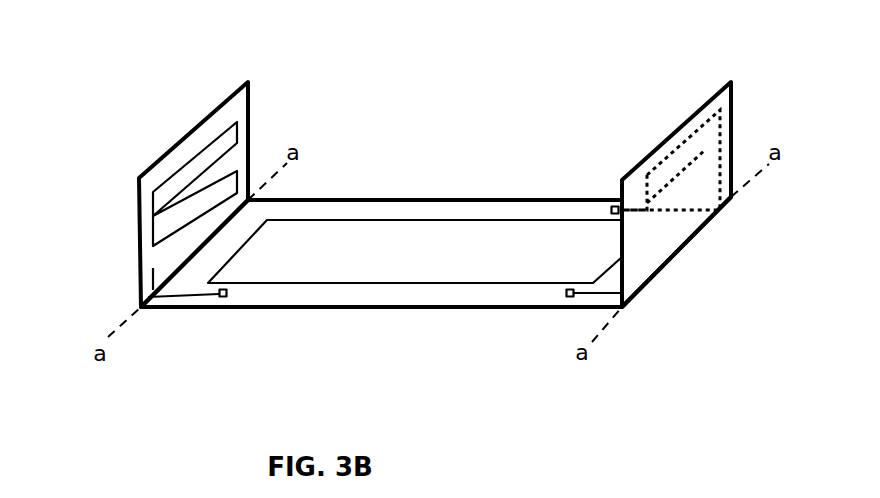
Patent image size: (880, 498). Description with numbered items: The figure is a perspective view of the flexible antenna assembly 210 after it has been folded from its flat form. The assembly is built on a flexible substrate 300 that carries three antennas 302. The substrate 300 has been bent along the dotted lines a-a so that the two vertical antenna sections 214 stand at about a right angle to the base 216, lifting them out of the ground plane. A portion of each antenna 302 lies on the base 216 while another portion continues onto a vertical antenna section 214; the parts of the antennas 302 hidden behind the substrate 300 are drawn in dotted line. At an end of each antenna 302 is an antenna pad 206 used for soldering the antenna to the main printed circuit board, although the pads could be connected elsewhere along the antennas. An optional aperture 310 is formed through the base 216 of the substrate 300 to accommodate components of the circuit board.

The flexible antenna assembly 210 is at (172, 74).
The vertical antenna section 214 is at (200, 125).
The base 216 is at (382, 308).
The antenna pad 206 is at (224, 297).
The flexible substrate 300 is at (400, 219).
The antenna 302 is at (188, 162).
The aperture 310 is at (318, 284).